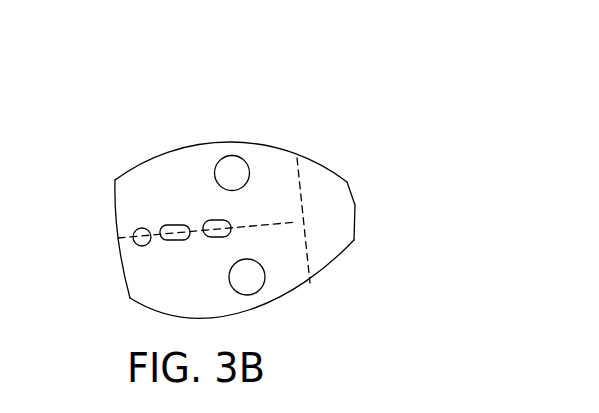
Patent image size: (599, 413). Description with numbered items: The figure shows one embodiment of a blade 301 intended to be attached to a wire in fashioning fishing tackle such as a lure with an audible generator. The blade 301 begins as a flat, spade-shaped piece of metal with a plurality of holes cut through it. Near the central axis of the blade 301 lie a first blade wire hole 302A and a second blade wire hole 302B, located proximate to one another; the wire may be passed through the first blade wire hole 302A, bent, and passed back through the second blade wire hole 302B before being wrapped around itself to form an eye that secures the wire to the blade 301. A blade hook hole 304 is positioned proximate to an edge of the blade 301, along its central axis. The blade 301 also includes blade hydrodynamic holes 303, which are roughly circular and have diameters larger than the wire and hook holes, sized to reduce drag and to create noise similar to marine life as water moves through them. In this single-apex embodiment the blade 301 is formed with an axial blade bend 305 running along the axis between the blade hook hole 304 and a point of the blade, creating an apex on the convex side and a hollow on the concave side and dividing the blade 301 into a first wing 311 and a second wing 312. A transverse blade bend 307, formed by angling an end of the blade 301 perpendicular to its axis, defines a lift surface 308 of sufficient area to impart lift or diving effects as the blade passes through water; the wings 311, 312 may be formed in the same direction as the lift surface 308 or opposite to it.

The blade 301 is at (309, 100).
The first blade wire hole 302A is at (166, 225).
The second blade wire hole 302B is at (210, 220).
The blade hydrodynamic hole 303 is at (230, 160).
The blade hook hole 304 is at (130, 238).
The axial blade bend 305 is at (273, 222).
The transverse blade bend 307 is at (307, 228).
The lift surface 308 is at (332, 218).
The first wing 311 is at (142, 193).
The second wing 312 is at (148, 280).